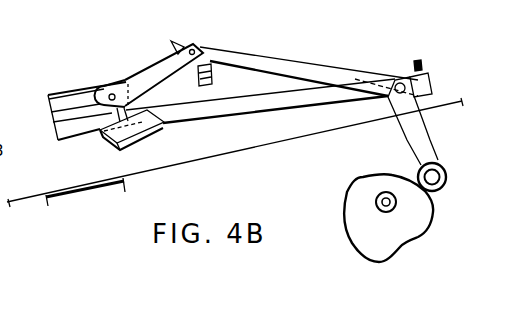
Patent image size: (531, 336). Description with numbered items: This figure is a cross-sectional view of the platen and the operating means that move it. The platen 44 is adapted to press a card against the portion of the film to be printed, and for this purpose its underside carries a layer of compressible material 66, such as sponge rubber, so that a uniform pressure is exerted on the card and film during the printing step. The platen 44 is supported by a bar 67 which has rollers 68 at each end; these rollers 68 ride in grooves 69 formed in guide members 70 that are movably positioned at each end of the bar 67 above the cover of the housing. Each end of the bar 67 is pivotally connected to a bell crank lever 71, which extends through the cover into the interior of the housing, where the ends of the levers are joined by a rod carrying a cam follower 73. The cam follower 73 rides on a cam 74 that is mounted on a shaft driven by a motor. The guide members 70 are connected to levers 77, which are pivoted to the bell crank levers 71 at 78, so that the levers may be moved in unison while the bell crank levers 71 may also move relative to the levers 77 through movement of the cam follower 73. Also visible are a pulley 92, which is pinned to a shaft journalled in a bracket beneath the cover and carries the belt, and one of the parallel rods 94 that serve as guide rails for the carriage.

The platen 44 is at (110, 137).
The layer of compressible material 66 is at (130, 146).
The bar 67 is at (153, 66).
The rollers 68 is at (90, 96).
The grooves 69 is at (48, 95).
The guide members 70 is at (82, 90).
The bell crank lever 71 is at (414, 137).
The cam follower 73 is at (446, 177).
The cam 74 is at (343, 204).
The levers 77 is at (230, 110).
The pivot 78 is at (398, 85).
The pulley 92 is at (222, 77).
The parallel rods 94 is at (423, 65).